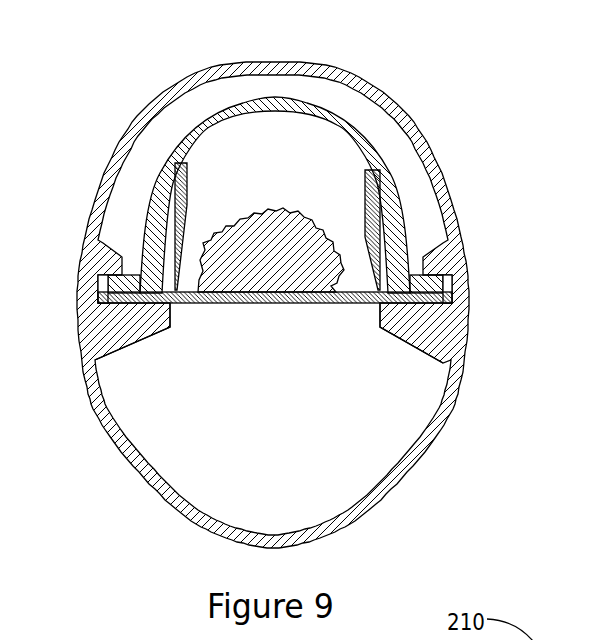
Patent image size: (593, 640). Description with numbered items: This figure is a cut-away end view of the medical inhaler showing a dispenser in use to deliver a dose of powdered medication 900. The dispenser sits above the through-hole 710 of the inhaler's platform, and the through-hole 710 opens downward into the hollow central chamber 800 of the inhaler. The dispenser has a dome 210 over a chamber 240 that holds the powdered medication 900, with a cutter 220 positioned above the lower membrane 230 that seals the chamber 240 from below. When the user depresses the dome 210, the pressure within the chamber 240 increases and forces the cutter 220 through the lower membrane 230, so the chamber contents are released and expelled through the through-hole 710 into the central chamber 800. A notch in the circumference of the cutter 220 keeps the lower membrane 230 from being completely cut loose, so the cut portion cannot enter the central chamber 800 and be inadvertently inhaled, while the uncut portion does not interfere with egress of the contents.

The dome 210 is at (177, 147).
The cutter 220 is at (165, 232).
The lower membrane 230 is at (412, 385).
The chamber 240 is at (268, 163).
The through-hole 710 is at (235, 325).
The central chamber 800 is at (257, 450).
The powdered medication 900 is at (320, 223).